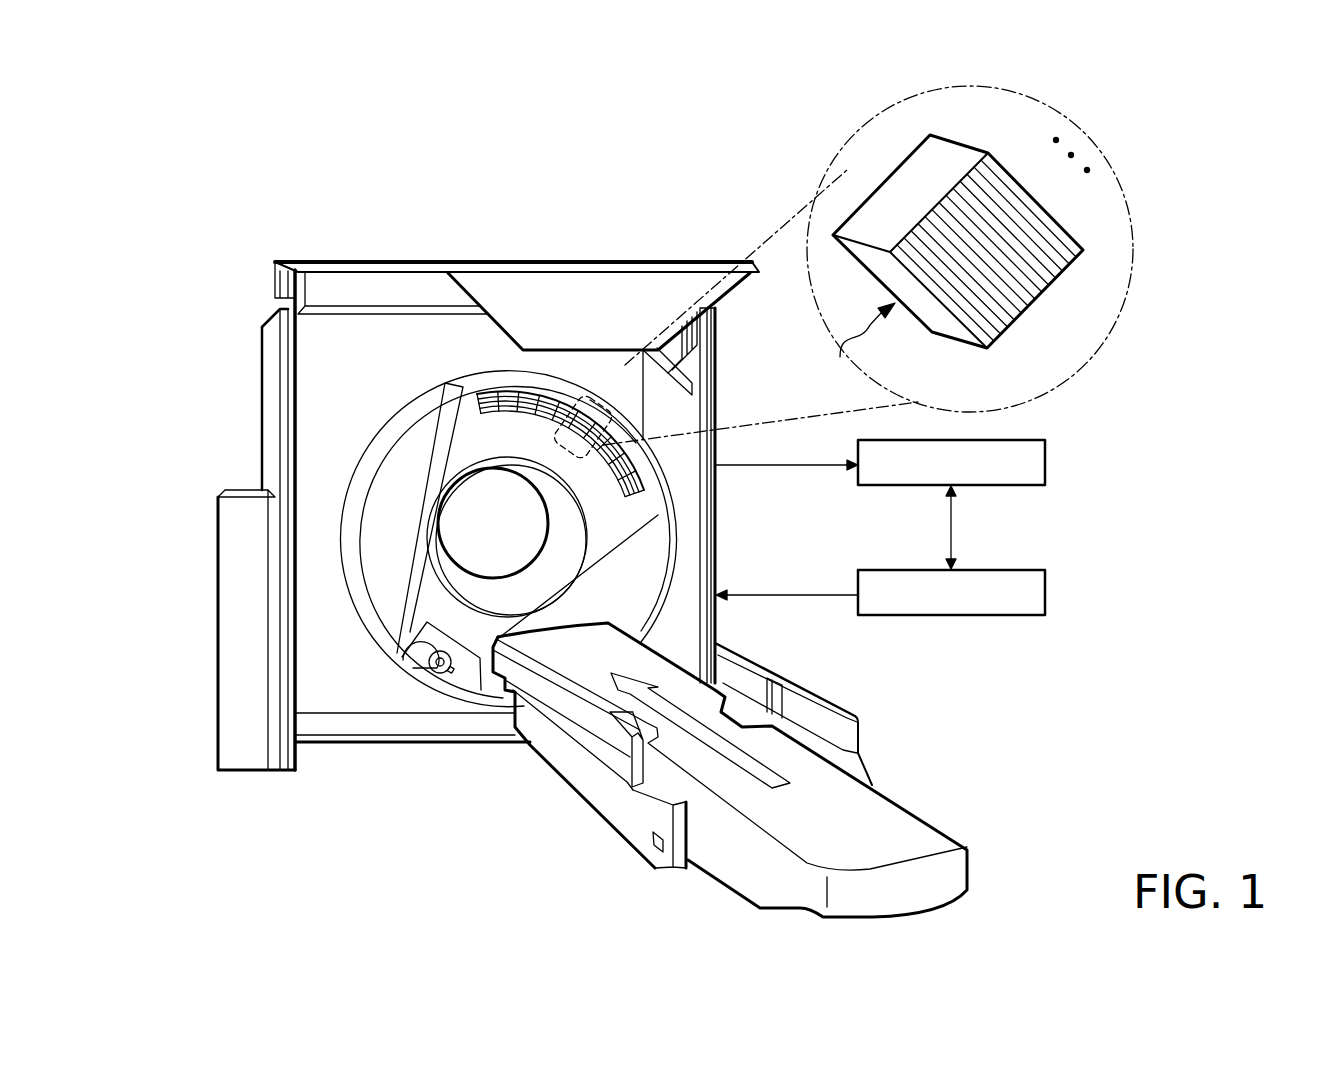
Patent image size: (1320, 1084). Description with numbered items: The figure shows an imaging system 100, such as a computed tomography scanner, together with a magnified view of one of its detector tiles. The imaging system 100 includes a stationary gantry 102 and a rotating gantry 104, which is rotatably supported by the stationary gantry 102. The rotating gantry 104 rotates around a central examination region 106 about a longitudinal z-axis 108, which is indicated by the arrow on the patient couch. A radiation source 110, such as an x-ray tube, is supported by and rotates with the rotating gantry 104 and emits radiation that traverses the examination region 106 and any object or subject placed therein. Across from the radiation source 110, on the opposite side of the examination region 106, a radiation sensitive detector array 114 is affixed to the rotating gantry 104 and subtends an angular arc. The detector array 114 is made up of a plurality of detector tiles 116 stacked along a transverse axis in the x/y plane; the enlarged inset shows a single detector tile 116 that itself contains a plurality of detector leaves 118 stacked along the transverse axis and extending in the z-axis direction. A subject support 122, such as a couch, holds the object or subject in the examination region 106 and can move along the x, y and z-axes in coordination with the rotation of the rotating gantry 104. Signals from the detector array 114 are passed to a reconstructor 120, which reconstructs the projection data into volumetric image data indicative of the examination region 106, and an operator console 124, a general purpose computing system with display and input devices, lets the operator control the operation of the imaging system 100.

The imaging system 100 is at (222, 281).
The stationary gantry 102 is at (265, 402).
The rotating gantry 104 is at (455, 437).
The examination region 106 is at (510, 543).
The z-axis 108 is at (842, 830).
The radiation source 110 is at (441, 668).
The detector array 114 is at (640, 484).
The detector tile 116 is at (489, 378).
The detector leaves 118 is at (990, 153).
The reconstructor 120 is at (1047, 465).
The subject support 122 is at (925, 832).
The operator console 124 is at (1047, 595).